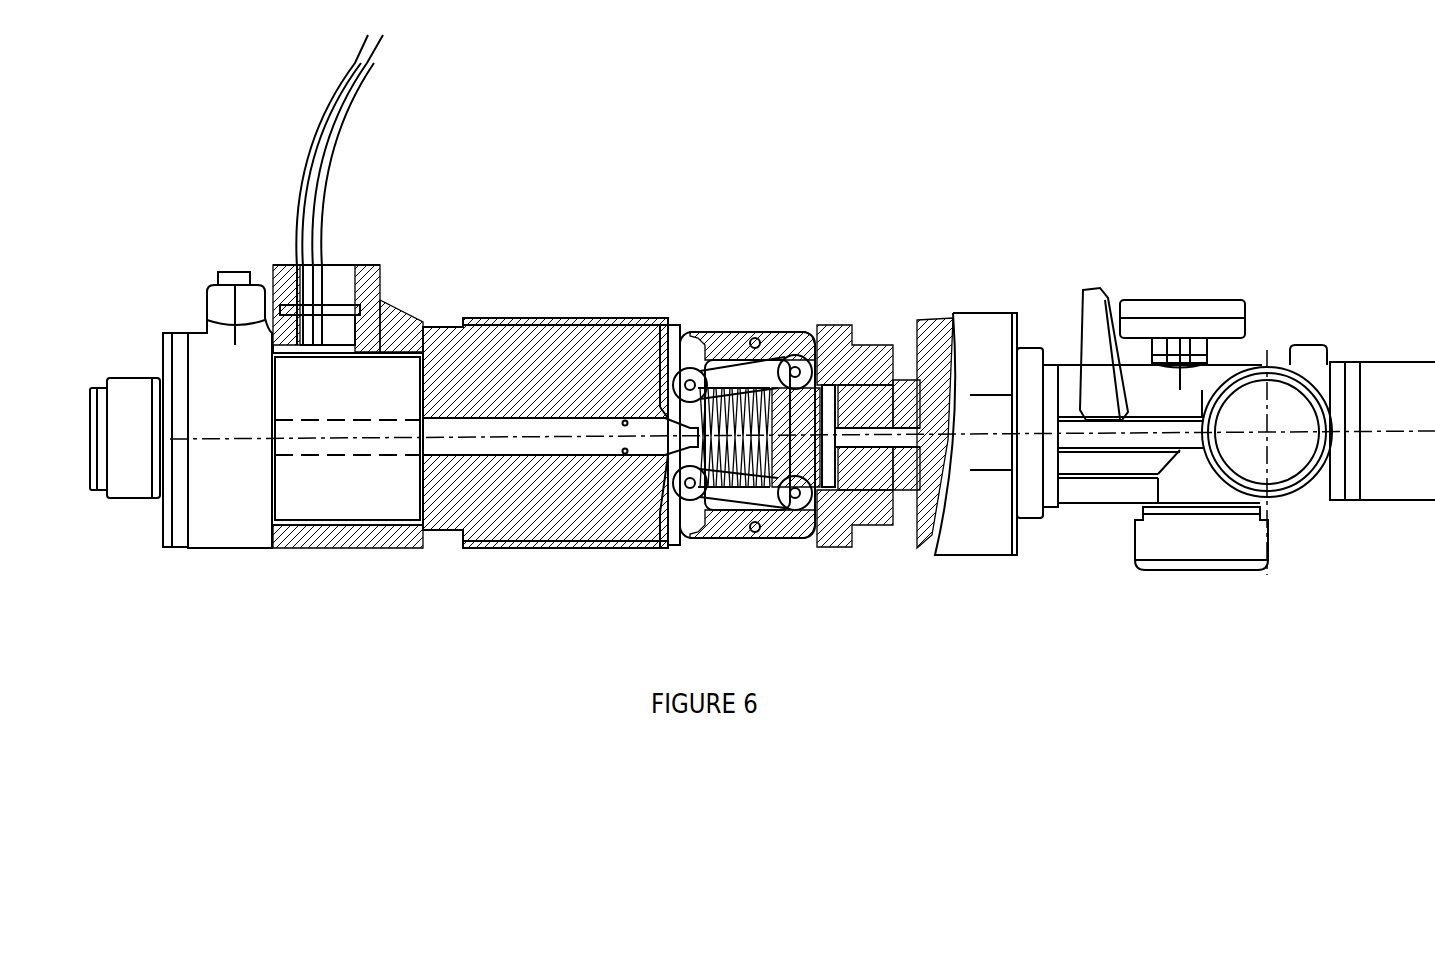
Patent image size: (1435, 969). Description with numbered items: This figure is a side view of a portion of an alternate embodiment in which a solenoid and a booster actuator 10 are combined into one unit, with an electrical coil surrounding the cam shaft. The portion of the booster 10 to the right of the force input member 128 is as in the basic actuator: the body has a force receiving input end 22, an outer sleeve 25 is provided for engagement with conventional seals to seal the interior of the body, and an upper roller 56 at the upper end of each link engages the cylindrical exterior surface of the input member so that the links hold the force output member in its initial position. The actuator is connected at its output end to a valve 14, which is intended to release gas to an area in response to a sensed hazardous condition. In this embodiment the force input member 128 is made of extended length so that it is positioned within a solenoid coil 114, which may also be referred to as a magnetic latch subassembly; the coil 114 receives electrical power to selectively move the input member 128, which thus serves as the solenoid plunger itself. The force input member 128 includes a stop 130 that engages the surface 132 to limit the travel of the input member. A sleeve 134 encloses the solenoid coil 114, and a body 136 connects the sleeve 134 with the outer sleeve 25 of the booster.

The booster actuator 10 is at (656, 275).
The valve 14 is at (1213, 240).
The force receiving input end 22 is at (707, 340).
The outer sleeve 25 is at (650, 555).
The upper roller 56 is at (757, 523).
The solenoid coil 114 is at (357, 493).
The force input member 128 is at (535, 428).
The stop 130 is at (658, 463).
The surface 132 is at (692, 485).
The sleeve 134 is at (328, 548).
The body 136 is at (498, 345).